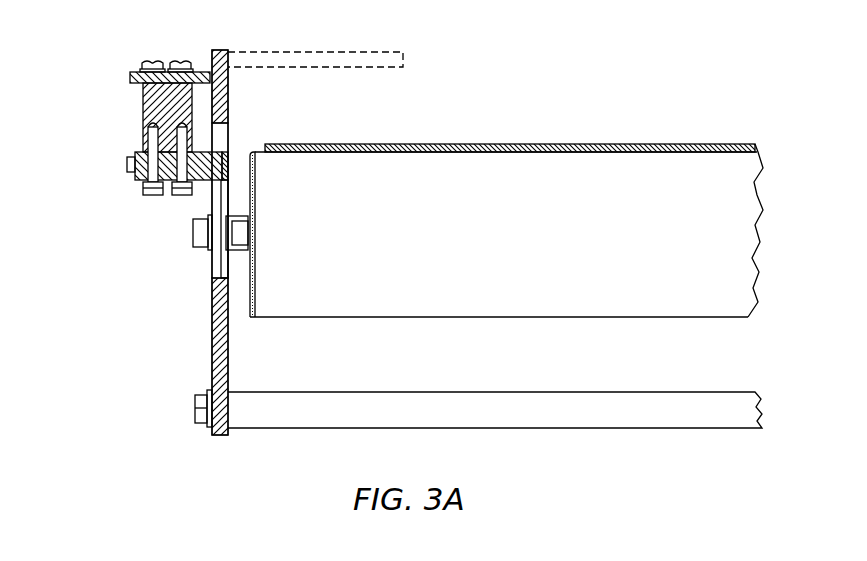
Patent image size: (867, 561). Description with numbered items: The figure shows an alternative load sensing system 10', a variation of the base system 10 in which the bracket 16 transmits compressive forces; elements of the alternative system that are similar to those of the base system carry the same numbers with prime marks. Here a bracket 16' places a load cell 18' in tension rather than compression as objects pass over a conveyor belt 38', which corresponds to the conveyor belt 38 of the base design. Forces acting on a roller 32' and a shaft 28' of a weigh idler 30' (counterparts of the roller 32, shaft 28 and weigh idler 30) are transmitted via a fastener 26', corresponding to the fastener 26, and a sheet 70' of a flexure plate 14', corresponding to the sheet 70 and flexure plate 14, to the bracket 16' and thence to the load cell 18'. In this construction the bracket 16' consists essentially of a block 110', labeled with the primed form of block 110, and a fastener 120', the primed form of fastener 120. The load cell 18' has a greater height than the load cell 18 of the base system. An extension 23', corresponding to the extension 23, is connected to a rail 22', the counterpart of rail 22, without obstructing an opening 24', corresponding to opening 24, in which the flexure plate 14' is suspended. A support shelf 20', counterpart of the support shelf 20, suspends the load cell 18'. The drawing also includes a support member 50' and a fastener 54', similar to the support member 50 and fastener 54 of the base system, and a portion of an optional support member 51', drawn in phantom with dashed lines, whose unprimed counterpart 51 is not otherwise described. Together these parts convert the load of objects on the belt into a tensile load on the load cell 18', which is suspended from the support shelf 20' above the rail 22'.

The alternative system 10' is at (683, 49).
The system 10 is at (683, 49).
The flexure plate 14' is at (302, 234).
The flexure plate 14 is at (302, 234).
The bracket 16' is at (173, 192).
The bracket 16 is at (173, 192).
The load cell 18' is at (131, 112).
The load cell 18 is at (131, 112).
The support shelf 20' is at (169, 98).
The support shelf 20 is at (169, 98).
The rail 22' is at (173, 242).
The rail 22 is at (173, 242).
The extension 23' is at (278, 86).
The extension 23 is at (278, 86).
The opening 24' is at (165, 209).
The opening 24 is at (165, 209).
The fastener 26' is at (164, 235).
The fastener 26 is at (164, 235).
The shaft 28' is at (279, 277).
The shaft 28 is at (279, 277).
The weigh idler 30' is at (505, 227).
The weigh idler 30 is at (505, 227).
The roller 32' is at (499, 339).
The roller 32 is at (499, 339).
The conveyor belt 38' is at (510, 114).
The conveyor belt 38 is at (510, 114).
The support member 50' is at (522, 376).
The support member 50 is at (522, 376).
The optional support member 51' is at (347, 47).
The alternative extension (phantom) 51 is at (347, 47).
The fastener 54' is at (162, 413).
The fastener 54 is at (162, 413).
The sheet 70' is at (277, 221).
The sheet 70 is at (277, 221).
The block 110' is at (287, 144).
The shim 110 is at (287, 144).
The fastener 120' is at (82, 148).
The side bolt 120 is at (82, 148).